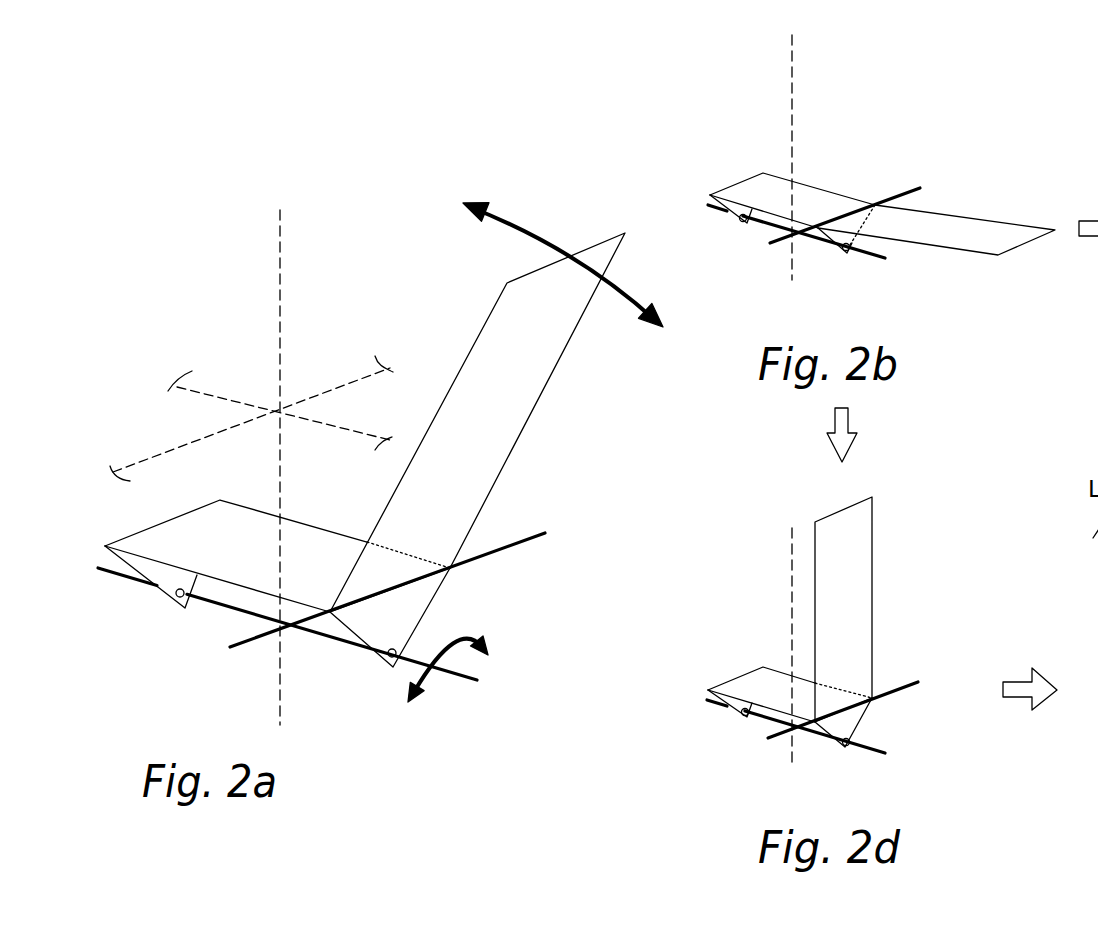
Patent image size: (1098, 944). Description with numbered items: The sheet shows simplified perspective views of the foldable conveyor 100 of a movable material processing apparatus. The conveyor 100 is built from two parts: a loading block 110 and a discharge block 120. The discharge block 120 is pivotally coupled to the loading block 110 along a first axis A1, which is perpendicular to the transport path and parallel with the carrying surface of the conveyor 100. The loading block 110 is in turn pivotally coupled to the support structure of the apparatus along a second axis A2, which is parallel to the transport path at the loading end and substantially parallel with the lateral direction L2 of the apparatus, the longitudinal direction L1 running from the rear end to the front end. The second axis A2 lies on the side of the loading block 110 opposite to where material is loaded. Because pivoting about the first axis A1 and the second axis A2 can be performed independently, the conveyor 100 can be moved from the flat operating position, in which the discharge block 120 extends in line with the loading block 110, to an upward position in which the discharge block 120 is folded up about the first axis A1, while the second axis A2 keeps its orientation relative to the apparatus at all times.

In FIG. 2A, the foldable conveyor 100 is at (392, 385).
In FIG. 2B, the foldable conveyor 100 is at (898, 214).
In FIG. 2D, the foldable conveyor 100 is at (885, 622).
In FIG. 2A, the loading block 110 is at (350, 538).
In FIG. 2B, the loading block 110 is at (778, 177).
In FIG. 2D, the loading block 110 is at (778, 672).
In FIG. 2A, the discharge block 120 is at (565, 350).
In FIG. 2B, the discharge block 120 is at (973, 252).
In FIG. 2D, the discharge block 120 is at (873, 608).
In FIG. 2A, the first axis A1 is at (513, 548).
In FIG. 2B, the first axis A1 is at (895, 193).
In FIG. 2D, the first axis A1 is at (902, 690).
In FIG. 2A, the second axis A2 is at (442, 670).
In FIG. 2B, the second axis A2 is at (868, 255).
In FIG. 2D, the second axis A2 is at (863, 750).
In FIG. 2A, the longitudinal direction L1 is at (170, 457).
In FIG. 2A, the lateral direction L2 is at (205, 390).